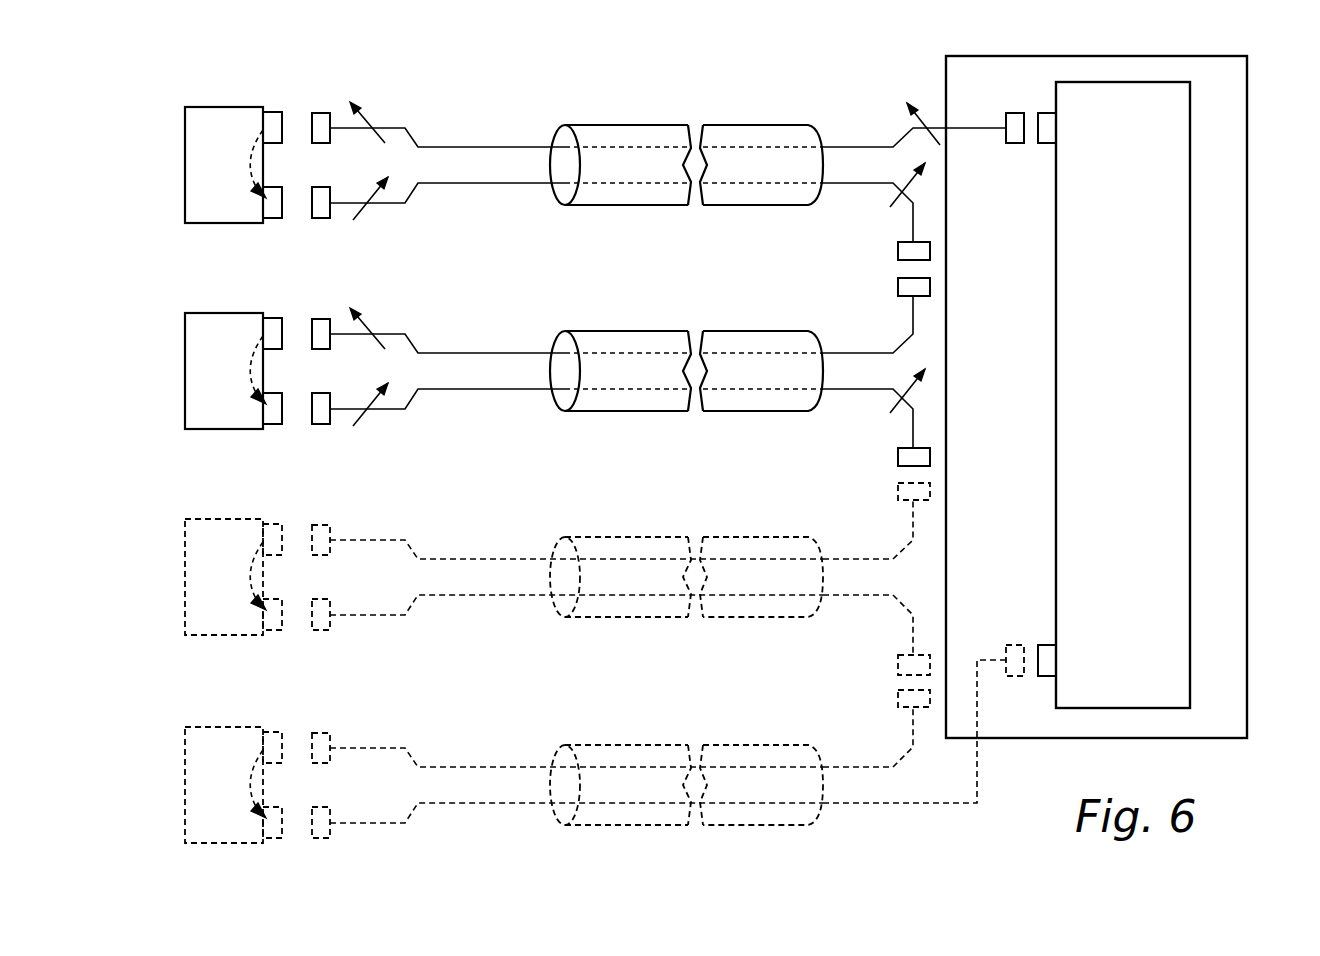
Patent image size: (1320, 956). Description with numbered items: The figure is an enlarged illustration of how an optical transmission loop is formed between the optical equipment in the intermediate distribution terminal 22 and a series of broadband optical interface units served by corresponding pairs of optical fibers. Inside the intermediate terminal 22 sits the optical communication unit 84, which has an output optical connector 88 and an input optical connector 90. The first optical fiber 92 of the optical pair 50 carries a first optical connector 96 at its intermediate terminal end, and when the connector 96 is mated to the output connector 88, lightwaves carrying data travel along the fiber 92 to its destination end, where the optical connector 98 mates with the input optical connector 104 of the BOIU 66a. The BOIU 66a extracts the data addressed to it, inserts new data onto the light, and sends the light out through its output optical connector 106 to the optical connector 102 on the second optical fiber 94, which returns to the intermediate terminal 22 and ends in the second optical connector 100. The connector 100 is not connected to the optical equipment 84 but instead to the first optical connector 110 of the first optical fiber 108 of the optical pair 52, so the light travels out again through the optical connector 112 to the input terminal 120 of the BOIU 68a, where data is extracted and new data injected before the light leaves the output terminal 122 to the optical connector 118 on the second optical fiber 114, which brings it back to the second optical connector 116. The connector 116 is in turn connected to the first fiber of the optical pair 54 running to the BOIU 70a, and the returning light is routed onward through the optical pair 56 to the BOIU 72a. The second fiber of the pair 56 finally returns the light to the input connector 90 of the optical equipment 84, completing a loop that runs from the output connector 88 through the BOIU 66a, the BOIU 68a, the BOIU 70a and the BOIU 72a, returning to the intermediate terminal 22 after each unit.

The intermediate distribution terminal 22 is at (1247, 246).
The optical communication unit 84 is at (1056, 360).
The output optical connector 88 is at (1046, 143).
The input optical connector 90 is at (1046, 645).
The first optical connector 96 is at (1016, 113).
The second optical connector 100 is at (898, 252).
The first optical connector 110 is at (898, 285).
The second optical connector 116 is at (898, 457).
The optical fiber pair 50 is at (647, 125).
The optical fiber pair 52 is at (646, 411).
The optical fiber pair 54 is at (640, 617).
The optical fiber pair 56 is at (645, 745).
The first optical fiber 92 is at (483, 147).
The second optical fiber 94 is at (498, 183).
The first optical fiber 108 is at (483, 353).
The second optical fiber 114 is at (498, 389).
The optical connector 98 is at (320, 113).
The optical connector 102 is at (321, 218).
The optical connector 112 is at (320, 319).
The optical connector 118 is at (321, 424).
The input optical connector 104 is at (272, 112).
The output optical connector 106 is at (272, 218).
The input terminal 120 is at (272, 318).
The output terminal 122 is at (272, 424).
The broadband optical interface unit 66a is at (185, 140).
The broadband optical interface unit 68a is at (185, 346).
The broadband optical interface unit 70a is at (185, 556).
The broadband optical interface unit 72a is at (185, 763).